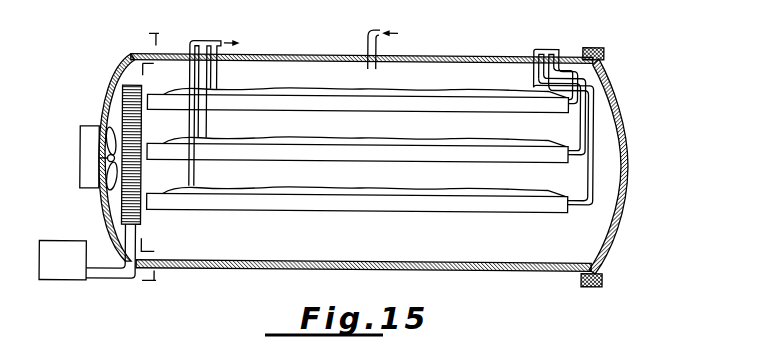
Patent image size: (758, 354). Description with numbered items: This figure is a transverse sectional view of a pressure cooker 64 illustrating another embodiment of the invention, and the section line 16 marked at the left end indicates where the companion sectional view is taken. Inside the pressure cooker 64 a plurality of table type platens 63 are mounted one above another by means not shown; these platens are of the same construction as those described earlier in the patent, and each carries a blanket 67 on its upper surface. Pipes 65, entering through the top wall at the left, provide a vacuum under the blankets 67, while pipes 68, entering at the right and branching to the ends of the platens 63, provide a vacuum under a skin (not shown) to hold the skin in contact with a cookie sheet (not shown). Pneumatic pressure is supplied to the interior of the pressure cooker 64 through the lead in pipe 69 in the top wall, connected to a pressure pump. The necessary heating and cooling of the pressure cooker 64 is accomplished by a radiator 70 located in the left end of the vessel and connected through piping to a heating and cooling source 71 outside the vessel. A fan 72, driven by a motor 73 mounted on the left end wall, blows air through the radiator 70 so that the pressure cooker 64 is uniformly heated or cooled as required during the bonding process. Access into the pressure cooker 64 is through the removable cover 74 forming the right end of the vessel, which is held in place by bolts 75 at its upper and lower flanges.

The section line 16- 16 is at (153, 35).
The table type platens 63 is at (291, 103).
The pressure cooker 64 is at (136, 54).
The pipes 65 is at (199, 41).
The blankets 67 is at (294, 93).
The pipes 68 is at (540, 52).
The lead in pipe 69 is at (366, 43).
The radiator 70 is at (122, 92).
The heating and cooling source 71 is at (56, 250).
The fan 72 is at (104, 119).
The motor 73 is at (80, 153).
The removable cover 74 is at (629, 161).
The bolts 75 is at (604, 51).